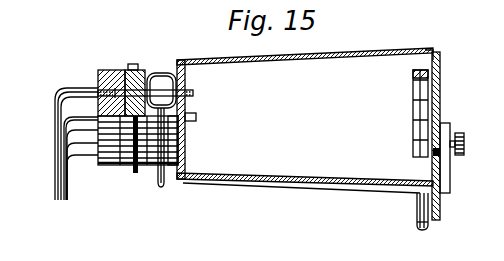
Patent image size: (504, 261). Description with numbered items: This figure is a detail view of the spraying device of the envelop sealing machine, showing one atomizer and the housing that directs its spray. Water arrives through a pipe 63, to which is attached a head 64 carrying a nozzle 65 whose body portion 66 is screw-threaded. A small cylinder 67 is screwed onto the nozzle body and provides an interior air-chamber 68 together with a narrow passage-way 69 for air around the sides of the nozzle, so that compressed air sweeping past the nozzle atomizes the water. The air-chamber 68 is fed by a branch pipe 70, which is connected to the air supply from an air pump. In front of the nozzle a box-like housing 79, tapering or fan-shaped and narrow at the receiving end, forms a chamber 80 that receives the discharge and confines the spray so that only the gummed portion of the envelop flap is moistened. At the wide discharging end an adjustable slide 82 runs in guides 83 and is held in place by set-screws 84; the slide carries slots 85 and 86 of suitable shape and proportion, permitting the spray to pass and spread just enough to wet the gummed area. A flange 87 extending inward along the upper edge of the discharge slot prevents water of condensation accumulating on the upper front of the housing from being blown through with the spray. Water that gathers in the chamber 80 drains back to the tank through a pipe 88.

The pipe 63 is at (55, 150).
The head 64 is at (102, 68).
The nozzle 65 is at (197, 95).
The body portion 66 is at (133, 64).
The small cylinder 67 is at (148, 70).
The interior air-chamber 68 is at (159, 82).
The narrow passage-way 69 is at (194, 89).
The branch pipe 70 is at (162, 188).
The box-like housing 79 is at (372, 27).
The chamber 80 is at (305, 120).
The adjustable slide 82 is at (442, 206).
The guides 83 is at (449, 127).
The set-screws 84 is at (465, 145).
The slot 85 is at (437, 93).
The slot 86 is at (440, 152).
The flange 87 is at (418, 72).
The pipe 88 is at (424, 230).